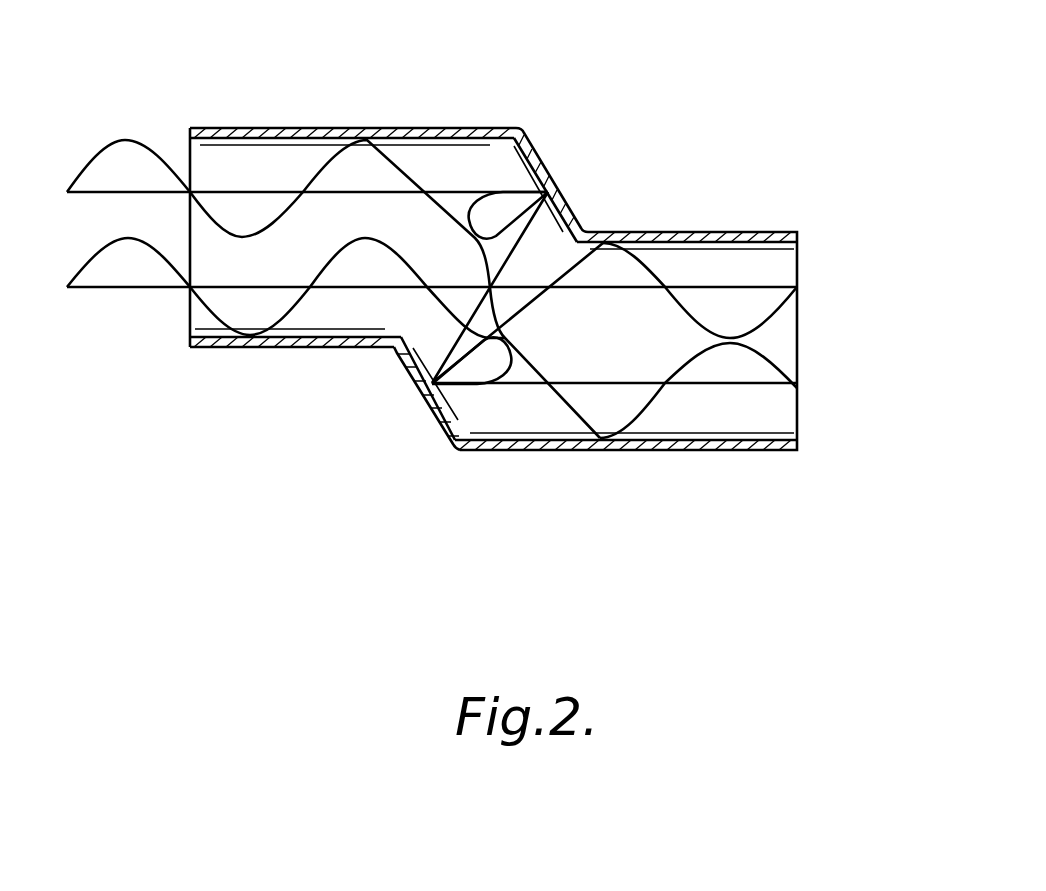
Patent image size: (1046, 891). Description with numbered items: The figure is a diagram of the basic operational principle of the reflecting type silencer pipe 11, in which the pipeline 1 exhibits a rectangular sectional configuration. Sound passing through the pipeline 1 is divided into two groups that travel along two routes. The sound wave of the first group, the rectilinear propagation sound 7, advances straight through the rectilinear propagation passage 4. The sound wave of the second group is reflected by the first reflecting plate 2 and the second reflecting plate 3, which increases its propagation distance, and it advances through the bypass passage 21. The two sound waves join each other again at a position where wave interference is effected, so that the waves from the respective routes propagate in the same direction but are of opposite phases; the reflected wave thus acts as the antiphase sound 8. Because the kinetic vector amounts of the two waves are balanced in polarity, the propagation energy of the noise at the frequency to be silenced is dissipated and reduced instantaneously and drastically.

The reflecting type silencer pipe 11 is at (177, 118).
The bypass passage 21 is at (448, 165).
The first reflecting plate 2 is at (512, 133).
The rectilinear propagation passage 4 is at (730, 268).
The rectilinear propagation sound 7 is at (778, 303).
The antiphase sound 8 is at (773, 370).
The pipeline 1 is at (331, 348).
The second reflecting plate 3 is at (458, 436).